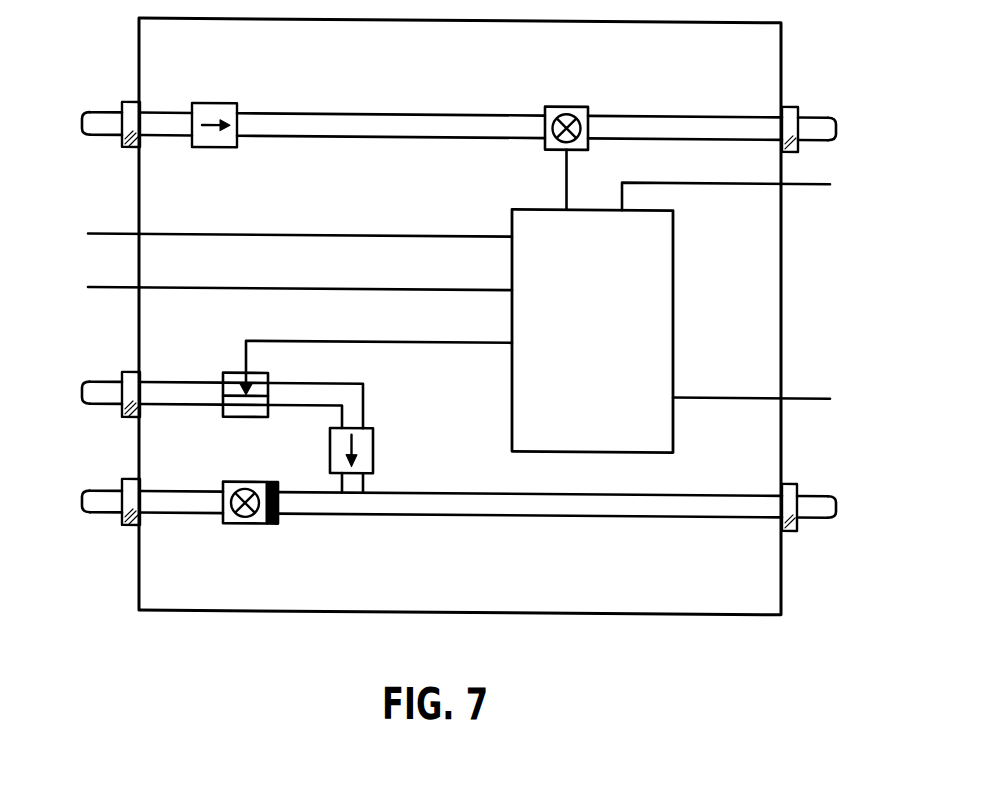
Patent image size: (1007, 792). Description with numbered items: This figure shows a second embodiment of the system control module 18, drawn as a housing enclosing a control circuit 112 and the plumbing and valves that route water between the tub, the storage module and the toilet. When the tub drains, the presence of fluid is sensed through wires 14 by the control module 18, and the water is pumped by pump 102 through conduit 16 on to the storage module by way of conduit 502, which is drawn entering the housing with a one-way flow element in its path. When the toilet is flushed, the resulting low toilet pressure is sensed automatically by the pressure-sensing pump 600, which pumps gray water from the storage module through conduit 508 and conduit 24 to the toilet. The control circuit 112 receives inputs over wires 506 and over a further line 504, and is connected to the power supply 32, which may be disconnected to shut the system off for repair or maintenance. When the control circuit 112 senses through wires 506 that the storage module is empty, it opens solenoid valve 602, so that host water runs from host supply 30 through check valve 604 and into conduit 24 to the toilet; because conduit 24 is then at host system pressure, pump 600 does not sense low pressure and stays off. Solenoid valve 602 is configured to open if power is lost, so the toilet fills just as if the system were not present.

The control module 18 is at (718, 579).
The control circuit 112 is at (615, 348).
The conduit 502 is at (82, 124).
The pump 102 is at (562, 102).
The conduit 16 is at (836, 123).
The wires 14 is at (830, 178).
The control input line 504 is at (88, 244).
The wires 506 is at (88, 298).
The host supply 30 is at (82, 393).
The solenoid valve 602 is at (233, 371).
The check valve 604 is at (373, 448).
The conduit 508 is at (82, 501).
The pressure-sensing pump 600 is at (233, 522).
The conduit 24 is at (836, 501).
The power supply 32 is at (830, 392).